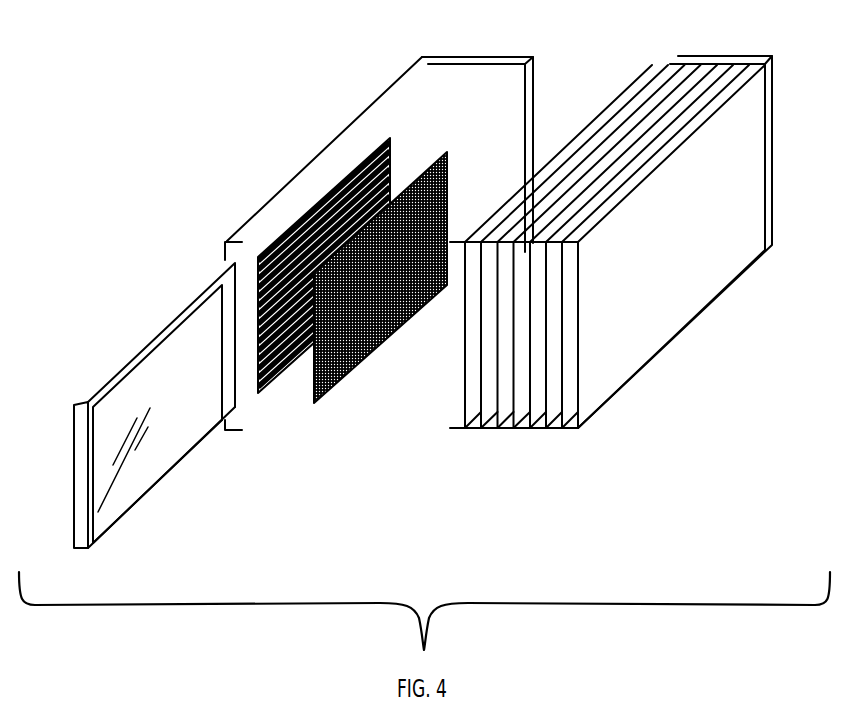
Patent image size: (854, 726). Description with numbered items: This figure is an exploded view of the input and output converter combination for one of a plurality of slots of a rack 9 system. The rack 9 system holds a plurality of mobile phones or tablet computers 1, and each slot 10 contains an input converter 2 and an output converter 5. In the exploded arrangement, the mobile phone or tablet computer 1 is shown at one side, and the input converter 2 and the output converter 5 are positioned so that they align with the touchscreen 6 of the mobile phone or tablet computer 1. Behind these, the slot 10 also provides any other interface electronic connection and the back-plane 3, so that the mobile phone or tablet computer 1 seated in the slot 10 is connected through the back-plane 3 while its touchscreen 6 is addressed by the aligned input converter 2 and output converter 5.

The mobile phone or tablet computer 1 is at (74, 418).
The touchscreen 6 is at (141, 489).
The slot 10 is at (295, 177).
The output converter 5 is at (392, 140).
The input converter 2 is at (444, 147).
The back-plane 3 is at (696, 55).
The rack 9 is at (698, 294).